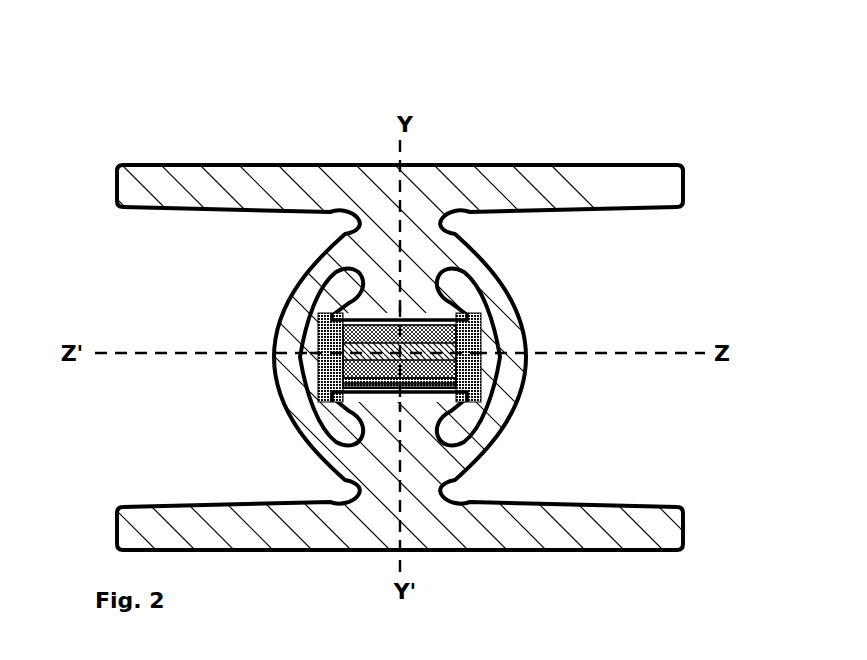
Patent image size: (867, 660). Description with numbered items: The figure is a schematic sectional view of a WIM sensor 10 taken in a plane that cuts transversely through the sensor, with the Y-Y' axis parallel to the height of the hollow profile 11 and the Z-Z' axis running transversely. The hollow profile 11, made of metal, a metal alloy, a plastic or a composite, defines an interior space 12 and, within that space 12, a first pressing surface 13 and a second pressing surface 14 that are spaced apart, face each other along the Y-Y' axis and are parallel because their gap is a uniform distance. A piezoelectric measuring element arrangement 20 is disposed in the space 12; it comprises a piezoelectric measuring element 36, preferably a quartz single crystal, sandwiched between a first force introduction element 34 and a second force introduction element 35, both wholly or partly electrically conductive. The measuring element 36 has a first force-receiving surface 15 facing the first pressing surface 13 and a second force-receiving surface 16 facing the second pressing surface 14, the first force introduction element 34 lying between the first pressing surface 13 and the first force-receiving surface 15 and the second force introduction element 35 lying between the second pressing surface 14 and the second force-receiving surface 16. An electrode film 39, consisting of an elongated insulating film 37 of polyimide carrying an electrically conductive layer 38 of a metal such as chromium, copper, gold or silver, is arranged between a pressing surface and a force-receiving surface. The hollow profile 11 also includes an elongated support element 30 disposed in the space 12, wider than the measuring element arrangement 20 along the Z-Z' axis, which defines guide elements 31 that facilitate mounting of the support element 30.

The WIM sensor 10 is at (176, 121).
The hollow profile 11 is at (563, 175).
The space 12 is at (462, 428).
The first pressing surface 13 is at (338, 213).
The second pressing surface 14 is at (423, 396).
The first force-receiving surface 15 is at (390, 342).
The second force-receiving surface 16 is at (398, 395).
The piezoelectric measuring element arrangement 20 is at (167, 228).
The support element 30 is at (490, 320).
The guide elements 31 is at (480, 316).
The first force introduction element 34 is at (360, 331).
The second force introduction element 35 is at (360, 372).
The piezoelectric measuring element 36 is at (352, 347).
The insulating film 37 is at (335, 400).
The electrically conductive layer 38 is at (350, 380).
The electrode film 39 is at (197, 367).